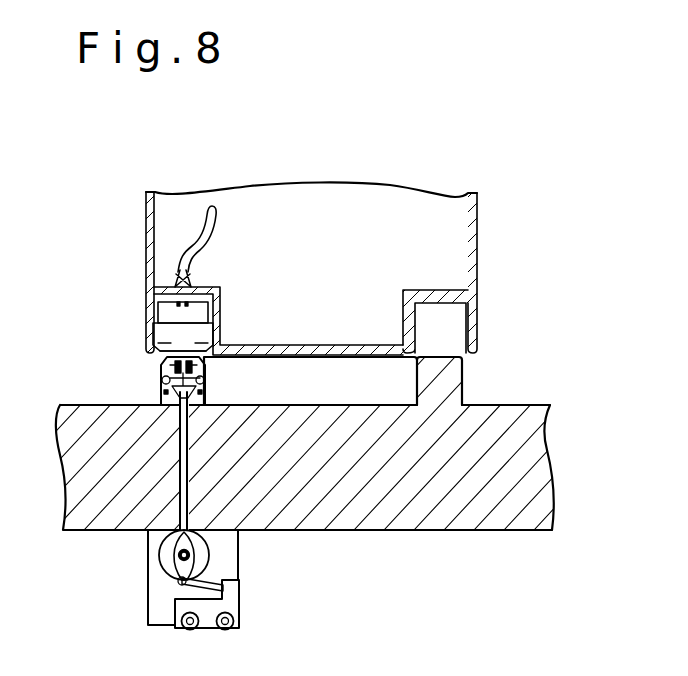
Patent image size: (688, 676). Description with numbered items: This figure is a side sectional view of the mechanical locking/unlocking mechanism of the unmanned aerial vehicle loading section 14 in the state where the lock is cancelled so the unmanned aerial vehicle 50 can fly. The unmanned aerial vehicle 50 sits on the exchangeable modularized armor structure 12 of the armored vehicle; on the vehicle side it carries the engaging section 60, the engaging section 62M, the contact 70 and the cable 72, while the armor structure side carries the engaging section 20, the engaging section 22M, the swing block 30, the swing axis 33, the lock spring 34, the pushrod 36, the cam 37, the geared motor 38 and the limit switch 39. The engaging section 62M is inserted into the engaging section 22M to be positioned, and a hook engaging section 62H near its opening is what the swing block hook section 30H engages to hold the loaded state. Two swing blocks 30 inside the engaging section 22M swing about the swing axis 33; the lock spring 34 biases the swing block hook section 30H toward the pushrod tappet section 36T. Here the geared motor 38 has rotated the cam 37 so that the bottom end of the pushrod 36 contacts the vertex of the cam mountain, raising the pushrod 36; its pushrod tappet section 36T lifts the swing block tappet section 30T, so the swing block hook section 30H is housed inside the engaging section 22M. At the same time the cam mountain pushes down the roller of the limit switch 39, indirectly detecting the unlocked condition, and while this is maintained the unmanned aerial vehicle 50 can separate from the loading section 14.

The modularized armor structure 12 is at (535, 445).
The unmanned aerial vehicle loading section 14 is at (510, 392).
The engaging section 20 is at (445, 390).
The engaging section 22M is at (203, 372).
The swing block 30 is at (68, 366).
The swing block hook section 30H is at (163, 384).
The swing block tappet section 30T is at (163, 398).
The swing axis 33 is at (165, 374).
The lock spring 34 is at (160, 362).
The pushrod 36 is at (178, 516).
The pushrod tappet section 36T is at (180, 408).
The cam 37 is at (173, 564).
The geared motor 38 is at (203, 568).
The limit switch 39 is at (234, 619).
The unmanned aerial vehicle 50 is at (312, 251).
The engaging section 60 is at (450, 322).
The hook engaging section 62H is at (203, 343).
The engaging section 62M is at (170, 328).
The contact 70 is at (199, 313).
The cable 72 is at (183, 282).